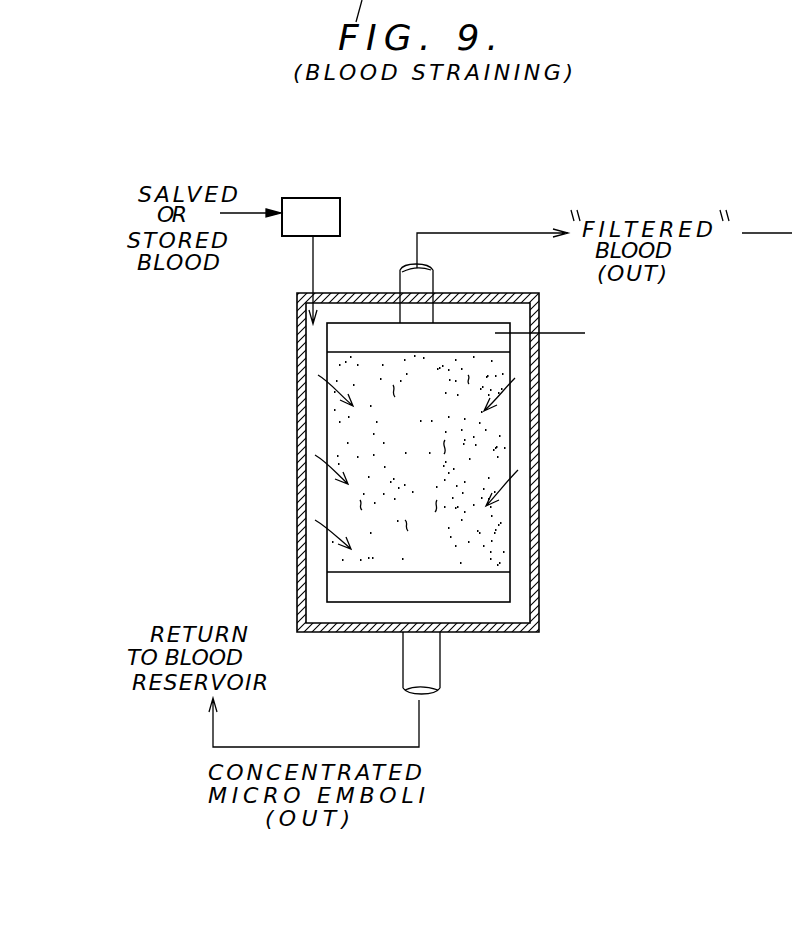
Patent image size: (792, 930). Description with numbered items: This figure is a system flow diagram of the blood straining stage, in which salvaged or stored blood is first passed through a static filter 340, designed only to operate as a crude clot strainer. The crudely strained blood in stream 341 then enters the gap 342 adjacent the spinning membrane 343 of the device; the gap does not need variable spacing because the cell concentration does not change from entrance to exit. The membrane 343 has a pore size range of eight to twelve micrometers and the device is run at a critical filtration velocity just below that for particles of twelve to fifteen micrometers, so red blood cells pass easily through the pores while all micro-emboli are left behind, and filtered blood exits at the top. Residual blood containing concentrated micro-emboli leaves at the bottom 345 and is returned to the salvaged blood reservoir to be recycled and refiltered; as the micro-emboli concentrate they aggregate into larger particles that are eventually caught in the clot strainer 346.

The static filter 340 is at (282, 462).
The stream of crudely strained blood 341 is at (314, 262).
The gap 342 is at (316, 347).
The spinning membrane 343 is at (500, 416).
The bottom outlet 345 is at (335, 746).
The clot strainer 346 is at (313, 200).